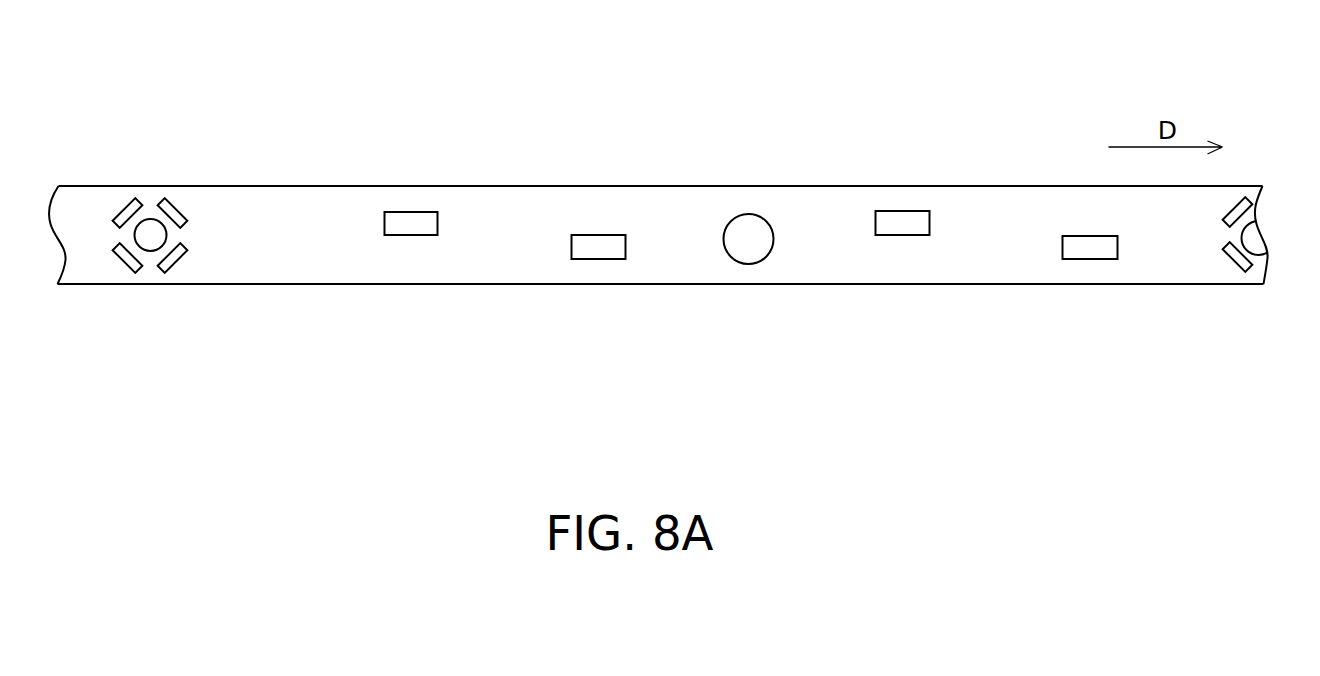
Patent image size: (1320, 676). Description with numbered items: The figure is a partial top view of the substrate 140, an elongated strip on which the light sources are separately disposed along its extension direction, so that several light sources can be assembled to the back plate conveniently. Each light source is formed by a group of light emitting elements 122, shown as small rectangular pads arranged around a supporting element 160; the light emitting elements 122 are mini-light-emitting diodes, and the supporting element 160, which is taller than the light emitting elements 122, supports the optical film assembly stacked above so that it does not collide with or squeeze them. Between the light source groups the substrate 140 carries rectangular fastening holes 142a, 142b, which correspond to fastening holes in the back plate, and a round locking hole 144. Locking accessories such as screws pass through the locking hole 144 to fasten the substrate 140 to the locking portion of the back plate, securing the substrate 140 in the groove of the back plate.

The substrate 140 is at (290, 137).
The light emitting element 122 is at (126, 207).
The supporting element 160 is at (150, 228).
The fastening hole 142a is at (893, 215).
The fastening hole 142b is at (1093, 250).
The locking hole 144 is at (749, 238).